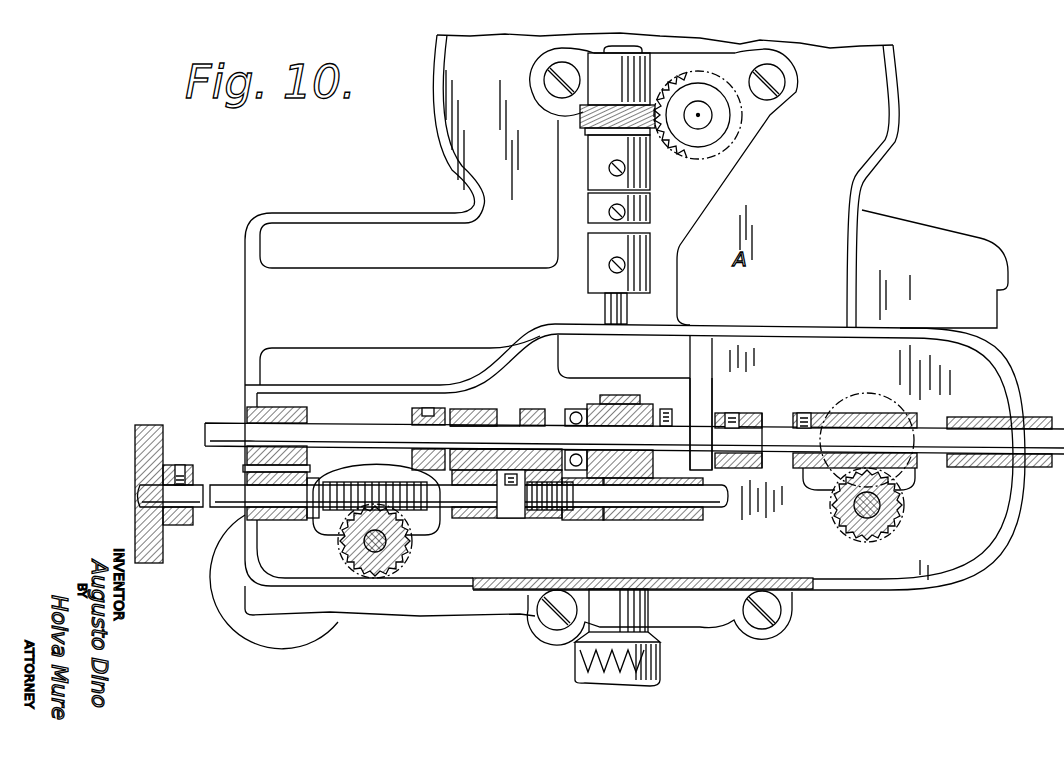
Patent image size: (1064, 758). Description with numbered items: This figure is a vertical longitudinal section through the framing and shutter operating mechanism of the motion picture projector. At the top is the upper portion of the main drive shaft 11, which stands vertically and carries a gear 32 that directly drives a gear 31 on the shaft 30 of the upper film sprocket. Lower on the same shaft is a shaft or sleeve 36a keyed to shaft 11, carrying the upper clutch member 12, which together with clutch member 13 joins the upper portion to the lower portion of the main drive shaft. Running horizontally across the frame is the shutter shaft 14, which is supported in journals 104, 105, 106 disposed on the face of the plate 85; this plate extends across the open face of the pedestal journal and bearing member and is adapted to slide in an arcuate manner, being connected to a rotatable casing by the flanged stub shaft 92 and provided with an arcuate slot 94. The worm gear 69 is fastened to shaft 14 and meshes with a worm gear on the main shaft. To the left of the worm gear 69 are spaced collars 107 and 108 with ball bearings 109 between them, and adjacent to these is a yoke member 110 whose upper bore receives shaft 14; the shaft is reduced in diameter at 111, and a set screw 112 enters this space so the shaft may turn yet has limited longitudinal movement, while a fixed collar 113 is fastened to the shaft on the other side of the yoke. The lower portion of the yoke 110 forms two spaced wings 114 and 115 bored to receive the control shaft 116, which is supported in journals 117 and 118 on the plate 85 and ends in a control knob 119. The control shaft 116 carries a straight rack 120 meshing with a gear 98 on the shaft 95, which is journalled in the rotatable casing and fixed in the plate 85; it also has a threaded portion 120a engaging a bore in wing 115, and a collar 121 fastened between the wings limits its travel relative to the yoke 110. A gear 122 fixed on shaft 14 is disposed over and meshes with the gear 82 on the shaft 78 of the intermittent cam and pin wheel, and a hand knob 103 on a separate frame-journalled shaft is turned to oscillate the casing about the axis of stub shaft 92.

The upper portion of the main drive shaft 11 is at (628, 305).
The upper clutch member 12 is at (662, 646).
The clutch member 13 is at (665, 682).
The shutter shaft 14 is at (212, 431).
The shaft of the upper film sprocket 30 is at (700, 128).
The gear 31 is at (722, 130).
The gear 32 is at (580, 116).
The shaft or sleeve 36a is at (650, 606).
The worm gear 69 is at (686, 424).
The shaft 78 is at (898, 497).
The gear 82 is at (888, 525).
The plate 85 is at (787, 441).
The flanged stub shaft 92 is at (410, 427).
The arcuate slot 94 is at (405, 522).
The shaft 95 is at (392, 550).
The gear 98 is at (364, 546).
The hand knob 103 is at (320, 624).
The journal 104 is at (950, 417).
The journal 105 is at (736, 412).
The journal 106 is at (260, 408).
The collar 107 is at (582, 452).
The collar 108 is at (590, 409).
The ball bearings 109 is at (598, 427).
The yoke member 110 is at (505, 411).
The reduced diameter portion 111 is at (486, 436).
The set screw 112 is at (535, 404).
The fixed collar 113 is at (420, 416).
The wing 114 is at (478, 518).
The wing 115 is at (540, 521).
The control shaft 116 is at (469, 493).
The journal 117 is at (672, 521).
The journal 118 is at (297, 512).
The control knob 119 is at (136, 480).
The straight rack 120 is at (370, 477).
The threaded portion 120a is at (568, 514).
The collar 121 is at (510, 520).
The gear 122 is at (852, 425).